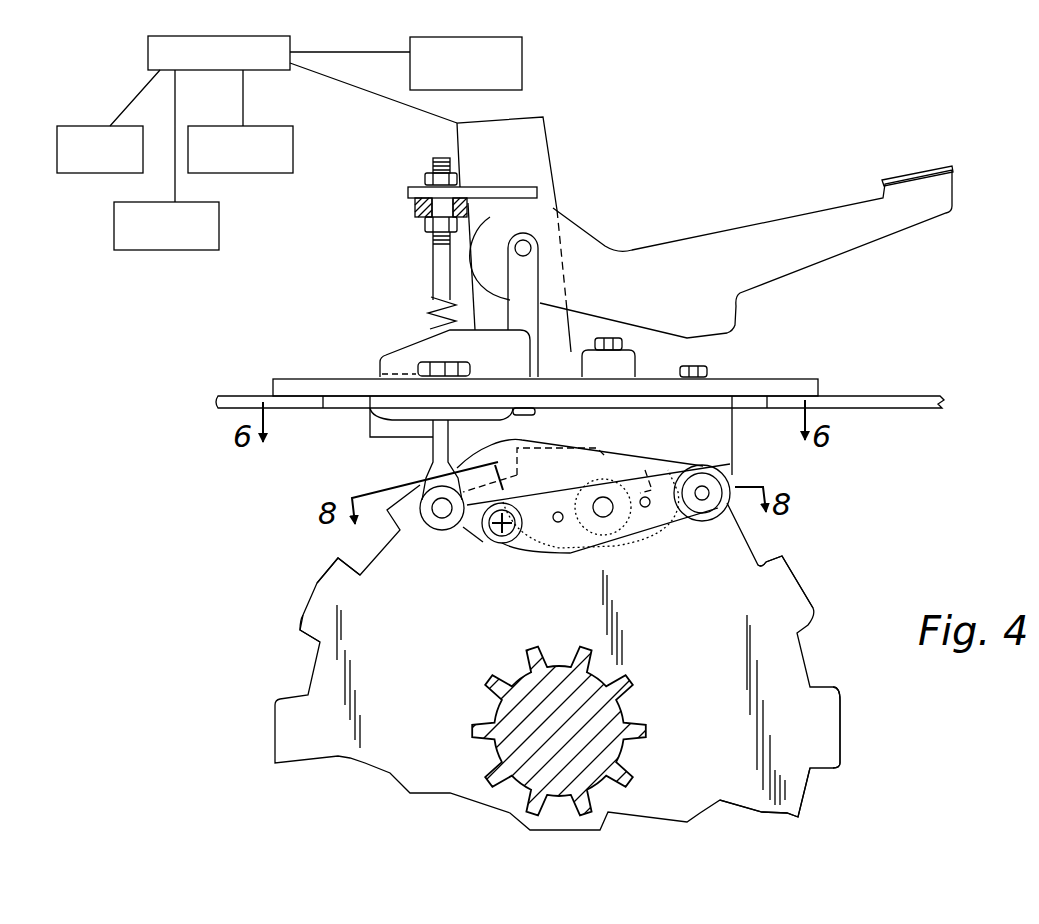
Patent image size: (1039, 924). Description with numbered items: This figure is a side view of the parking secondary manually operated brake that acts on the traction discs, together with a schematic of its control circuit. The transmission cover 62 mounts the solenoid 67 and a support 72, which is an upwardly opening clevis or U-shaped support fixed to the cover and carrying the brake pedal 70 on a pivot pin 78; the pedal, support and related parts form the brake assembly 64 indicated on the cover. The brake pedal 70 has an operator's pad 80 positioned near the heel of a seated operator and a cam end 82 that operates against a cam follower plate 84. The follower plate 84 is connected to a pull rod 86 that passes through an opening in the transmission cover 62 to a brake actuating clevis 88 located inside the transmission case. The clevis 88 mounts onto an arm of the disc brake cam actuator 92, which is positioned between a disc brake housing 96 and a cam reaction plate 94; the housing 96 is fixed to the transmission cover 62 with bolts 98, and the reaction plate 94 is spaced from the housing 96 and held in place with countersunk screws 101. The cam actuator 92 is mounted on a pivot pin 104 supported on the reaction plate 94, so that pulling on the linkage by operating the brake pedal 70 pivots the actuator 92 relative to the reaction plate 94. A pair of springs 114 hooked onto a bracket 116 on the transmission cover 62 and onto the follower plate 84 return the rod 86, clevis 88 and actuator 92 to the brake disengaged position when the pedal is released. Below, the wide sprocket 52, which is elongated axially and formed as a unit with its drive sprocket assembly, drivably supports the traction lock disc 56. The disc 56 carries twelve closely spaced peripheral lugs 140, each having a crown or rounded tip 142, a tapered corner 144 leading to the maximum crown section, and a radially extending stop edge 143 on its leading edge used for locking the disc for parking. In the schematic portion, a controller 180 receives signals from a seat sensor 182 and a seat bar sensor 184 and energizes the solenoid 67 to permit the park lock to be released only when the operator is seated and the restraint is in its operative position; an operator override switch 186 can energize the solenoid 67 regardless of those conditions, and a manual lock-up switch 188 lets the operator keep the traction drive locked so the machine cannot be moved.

The controller 180 is at (266, 70).
The seat sensor 182 is at (60, 173).
The seat bar sensor 184 is at (168, 250).
The operator override switch 186 is at (255, 173).
The manual lock-up switch 188 is at (522, 46).
The solenoid 67 is at (538, 128).
The cam follower plate 84 is at (510, 187).
The control lever assembly 64 is at (566, 208).
The operator's pad 80 is at (930, 172).
The brake pedal 70 is at (757, 230).
The cam end 82 is at (463, 252).
The pull rod 86 is at (435, 276).
The springs 114 is at (428, 306).
The bracket 116 is at (412, 355).
The pivot pin 78 is at (531, 248).
The support 72 is at (528, 282).
The bolts 98 is at (684, 368).
The transmission cover 62 is at (710, 386).
The brake actuating clevis 88 is at (440, 470).
The disc brake cam actuator 92 is at (545, 467).
The disc brake housing 96 is at (471, 505).
The countersunk screws 101 is at (722, 467).
The pivot pin 104 is at (605, 513).
The cam reaction plate 94 is at (676, 520).
The lugs 140 is at (790, 592).
The rounded tip 142 is at (320, 580).
The stop edges 143 is at (300, 617).
The tapered corner 144 is at (781, 560).
The wide sprocket 52 is at (605, 712).
The traction lock disc 56 is at (790, 782).